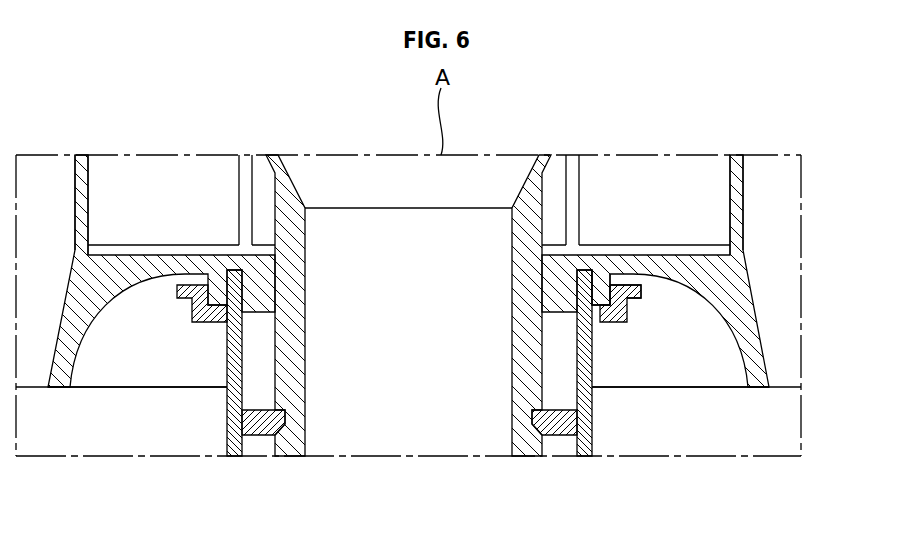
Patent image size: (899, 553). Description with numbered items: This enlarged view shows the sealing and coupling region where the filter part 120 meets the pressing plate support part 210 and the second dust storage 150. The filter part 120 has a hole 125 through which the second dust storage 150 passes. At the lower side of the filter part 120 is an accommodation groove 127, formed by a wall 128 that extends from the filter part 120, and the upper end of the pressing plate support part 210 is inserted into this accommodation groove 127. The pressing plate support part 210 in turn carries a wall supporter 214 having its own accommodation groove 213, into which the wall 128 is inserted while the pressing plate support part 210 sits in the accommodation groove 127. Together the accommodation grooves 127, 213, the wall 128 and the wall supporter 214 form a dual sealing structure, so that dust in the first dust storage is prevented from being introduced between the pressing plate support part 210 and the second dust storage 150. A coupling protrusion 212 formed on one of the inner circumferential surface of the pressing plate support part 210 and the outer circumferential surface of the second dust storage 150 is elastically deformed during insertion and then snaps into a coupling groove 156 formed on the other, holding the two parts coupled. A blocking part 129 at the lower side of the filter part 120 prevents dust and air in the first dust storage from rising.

The filter part 120 is at (667, 265).
The hole 125 is at (562, 252).
The accommodation groove 127 is at (585, 277).
The wall 128 is at (603, 280).
The blocking part 129 is at (745, 312).
The second dust storage 150 is at (292, 457).
The coupling groove 156 is at (283, 433).
The pressing plate support part 210 is at (582, 456).
The coupling protrusion 212 is at (553, 428).
The accommodation groove 213 is at (605, 322).
The wall supporter 214 is at (640, 315).